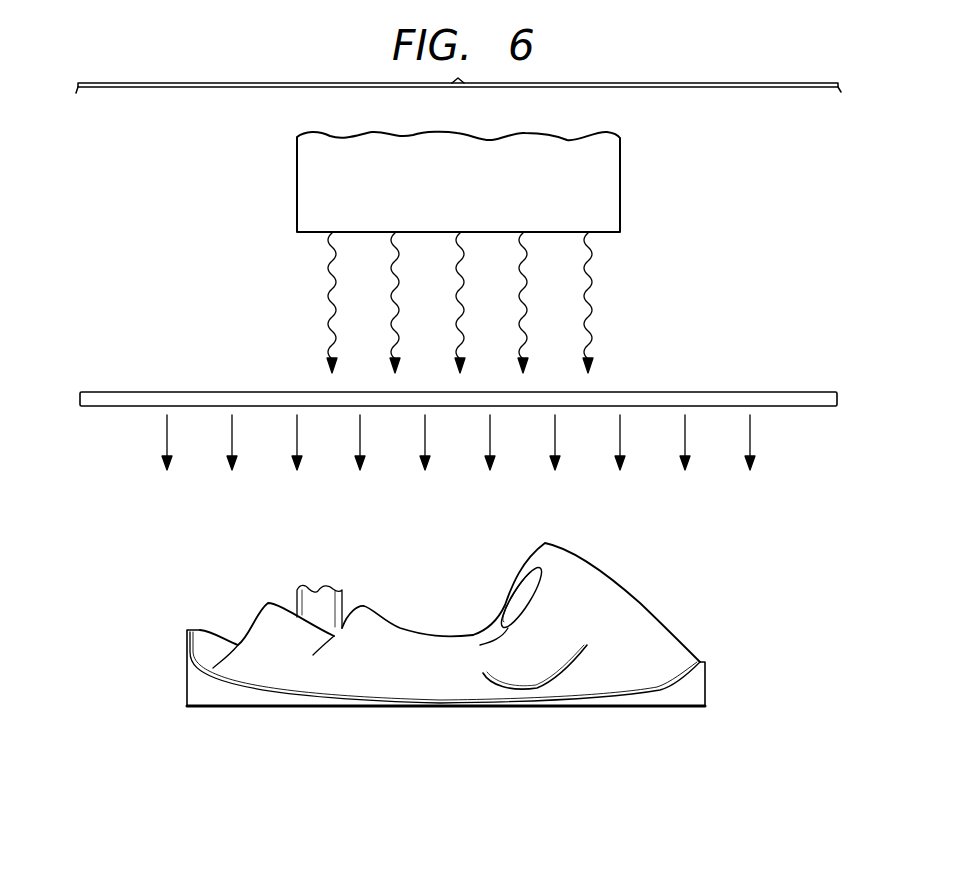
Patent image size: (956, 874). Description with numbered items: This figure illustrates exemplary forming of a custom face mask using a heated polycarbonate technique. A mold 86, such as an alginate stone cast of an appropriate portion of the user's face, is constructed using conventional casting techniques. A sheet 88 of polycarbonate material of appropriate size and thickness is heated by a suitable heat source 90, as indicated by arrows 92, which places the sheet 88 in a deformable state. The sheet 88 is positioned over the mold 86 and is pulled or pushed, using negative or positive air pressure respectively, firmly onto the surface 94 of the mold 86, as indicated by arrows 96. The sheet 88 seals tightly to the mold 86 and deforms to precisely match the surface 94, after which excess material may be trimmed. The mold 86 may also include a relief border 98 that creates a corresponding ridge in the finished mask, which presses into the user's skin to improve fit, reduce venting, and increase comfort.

The mold 86 is at (622, 598).
The sheet 88 is at (655, 391).
The heat source 90 is at (622, 180).
The arrows 92 is at (593, 266).
The surface 94 is at (390, 622).
The arrows 96 is at (165, 433).
The relief border 98 is at (248, 685).